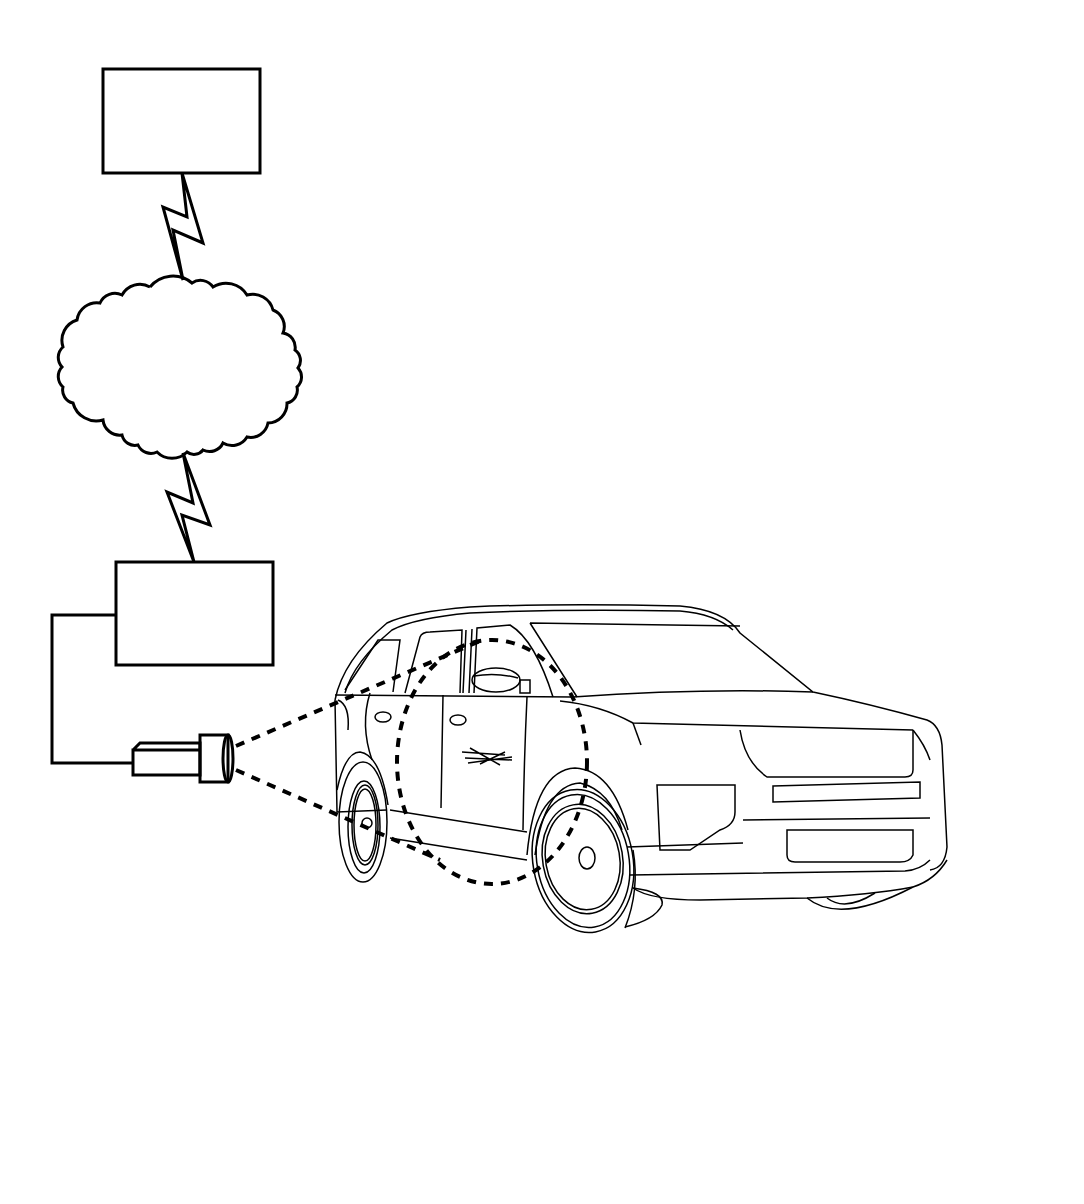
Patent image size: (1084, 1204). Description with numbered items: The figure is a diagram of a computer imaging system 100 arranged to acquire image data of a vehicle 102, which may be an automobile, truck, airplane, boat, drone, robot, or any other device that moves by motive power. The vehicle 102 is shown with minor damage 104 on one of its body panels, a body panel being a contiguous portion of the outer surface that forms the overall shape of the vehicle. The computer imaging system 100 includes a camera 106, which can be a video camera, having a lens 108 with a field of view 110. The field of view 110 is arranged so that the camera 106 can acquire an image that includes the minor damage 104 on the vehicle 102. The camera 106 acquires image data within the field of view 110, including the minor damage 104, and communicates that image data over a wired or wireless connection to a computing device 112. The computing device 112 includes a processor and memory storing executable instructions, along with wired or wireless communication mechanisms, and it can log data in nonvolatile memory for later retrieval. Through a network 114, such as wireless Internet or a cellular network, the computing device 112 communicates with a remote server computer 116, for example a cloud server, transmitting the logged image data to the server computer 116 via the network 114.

The computer imaging system 100 is at (499, 600).
The vehicle 102 is at (743, 635).
The minor damage 104 is at (493, 765).
The camera 106 is at (168, 775).
The lens 108 is at (217, 783).
The field of view 110 is at (305, 800).
The computing device 112 is at (194, 613).
The network 114 is at (179, 367).
The server computer 116 is at (181, 121).